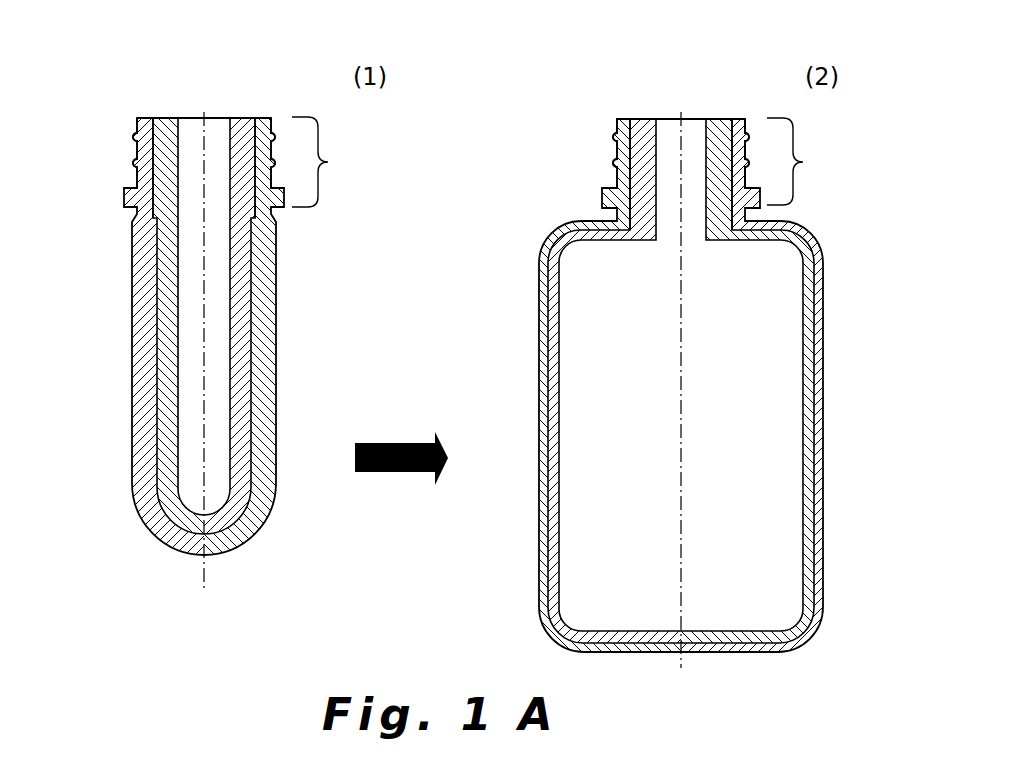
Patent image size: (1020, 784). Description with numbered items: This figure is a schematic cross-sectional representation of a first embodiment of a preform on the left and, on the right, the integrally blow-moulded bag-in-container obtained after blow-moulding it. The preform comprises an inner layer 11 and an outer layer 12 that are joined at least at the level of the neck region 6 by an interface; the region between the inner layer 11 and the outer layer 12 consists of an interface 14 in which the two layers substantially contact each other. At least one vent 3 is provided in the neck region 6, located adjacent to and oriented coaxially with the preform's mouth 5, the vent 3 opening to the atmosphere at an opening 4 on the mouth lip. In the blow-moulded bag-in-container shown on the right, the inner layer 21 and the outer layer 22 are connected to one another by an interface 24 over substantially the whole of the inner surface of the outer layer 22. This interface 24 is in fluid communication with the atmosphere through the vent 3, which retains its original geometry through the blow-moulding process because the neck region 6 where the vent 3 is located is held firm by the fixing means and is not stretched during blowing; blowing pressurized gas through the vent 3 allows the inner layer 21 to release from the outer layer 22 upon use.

The vent 3 is at (150, 155).
The vent opening 4 is at (155, 120).
The preform mouth 5 is at (190, 117).
The neck region 6 is at (560, 162).
The inner layer 11 is at (178, 364).
The outer layer 12 is at (132, 400).
The interface 14 is at (252, 330).
The inner layer of bag-in-container 21 is at (563, 362).
The outer layer of bag-in-container 22 is at (542, 398).
The interface of bag-in-container 24 is at (822, 265).